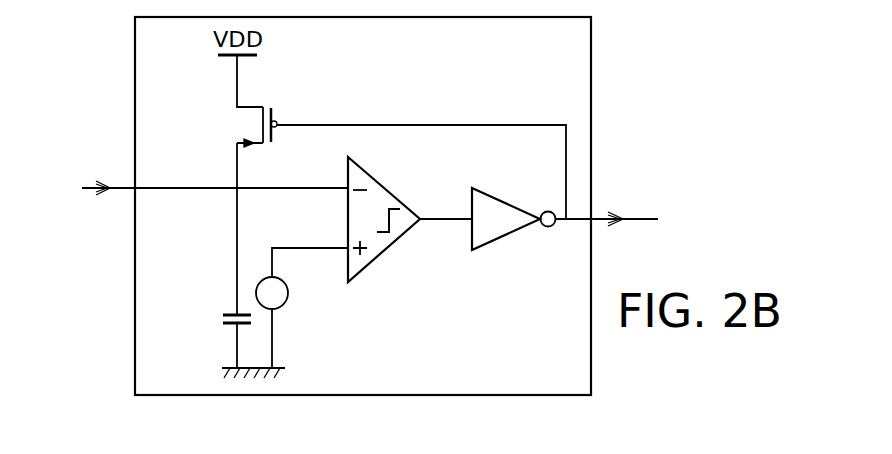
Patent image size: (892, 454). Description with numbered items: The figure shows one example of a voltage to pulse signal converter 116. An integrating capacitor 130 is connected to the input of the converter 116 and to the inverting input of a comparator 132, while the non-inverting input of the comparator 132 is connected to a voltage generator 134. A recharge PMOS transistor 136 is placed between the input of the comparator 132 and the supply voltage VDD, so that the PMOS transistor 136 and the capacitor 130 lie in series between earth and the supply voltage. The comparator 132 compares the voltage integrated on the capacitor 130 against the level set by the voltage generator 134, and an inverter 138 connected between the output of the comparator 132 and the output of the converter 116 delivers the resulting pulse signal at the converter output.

The converter 116 is at (580, 63).
The integrating capacitor 130 is at (226, 315).
The comparator 132 is at (380, 202).
The voltage generator 134 is at (283, 300).
The recharge PMOS transistor 136 is at (252, 107).
The inverter 138 is at (500, 228).